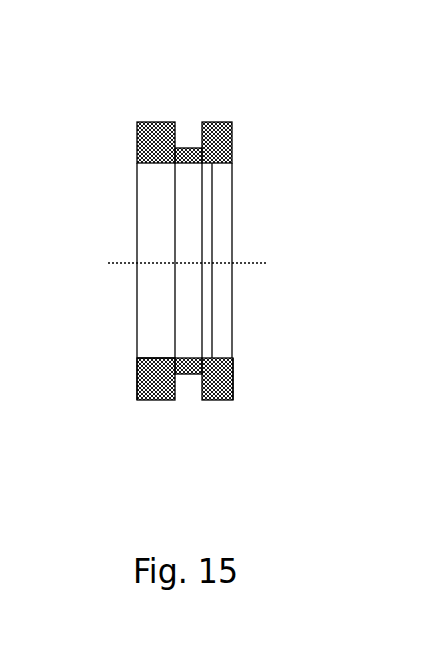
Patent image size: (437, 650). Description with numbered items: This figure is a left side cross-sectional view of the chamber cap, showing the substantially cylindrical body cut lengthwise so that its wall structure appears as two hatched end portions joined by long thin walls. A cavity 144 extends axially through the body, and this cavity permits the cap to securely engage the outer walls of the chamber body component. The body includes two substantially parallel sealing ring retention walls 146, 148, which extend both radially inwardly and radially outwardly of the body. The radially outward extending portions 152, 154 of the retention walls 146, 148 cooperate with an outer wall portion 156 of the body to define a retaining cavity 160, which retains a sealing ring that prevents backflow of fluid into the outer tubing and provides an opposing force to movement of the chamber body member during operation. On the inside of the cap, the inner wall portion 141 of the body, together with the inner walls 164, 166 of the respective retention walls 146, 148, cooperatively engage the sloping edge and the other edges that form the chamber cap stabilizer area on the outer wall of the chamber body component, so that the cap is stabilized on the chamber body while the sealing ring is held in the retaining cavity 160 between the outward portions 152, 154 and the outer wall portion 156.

The inner wall portion 141 is at (150, 356).
The cavity 144 is at (243, 232).
The sealing ring retention wall 146 is at (138, 378).
The sealing ring retention wall 148 is at (233, 378).
The radially outward extending portion 152 is at (140, 395).
The radially outward extending portion 154 is at (205, 395).
The outer wall portion 156 is at (218, 392).
The retaining cavity 160 is at (186, 148).
The inner wall 164 is at (165, 153).
The inner wall 166 is at (213, 153).